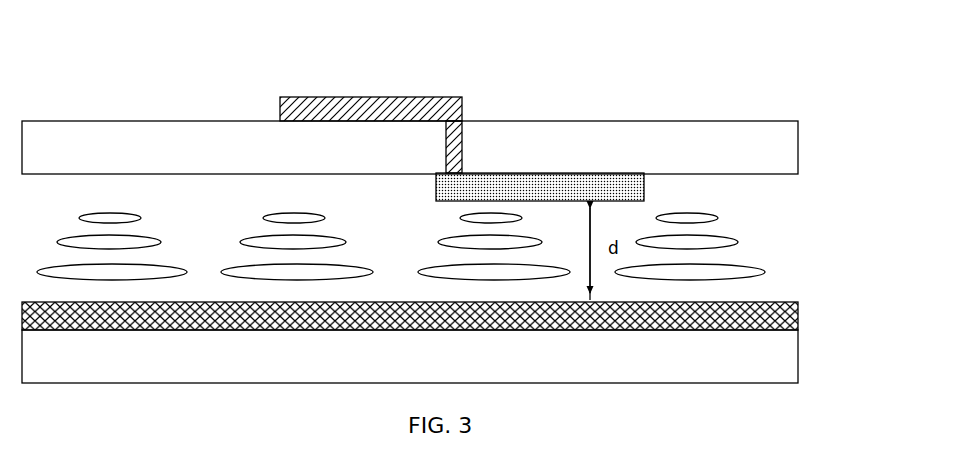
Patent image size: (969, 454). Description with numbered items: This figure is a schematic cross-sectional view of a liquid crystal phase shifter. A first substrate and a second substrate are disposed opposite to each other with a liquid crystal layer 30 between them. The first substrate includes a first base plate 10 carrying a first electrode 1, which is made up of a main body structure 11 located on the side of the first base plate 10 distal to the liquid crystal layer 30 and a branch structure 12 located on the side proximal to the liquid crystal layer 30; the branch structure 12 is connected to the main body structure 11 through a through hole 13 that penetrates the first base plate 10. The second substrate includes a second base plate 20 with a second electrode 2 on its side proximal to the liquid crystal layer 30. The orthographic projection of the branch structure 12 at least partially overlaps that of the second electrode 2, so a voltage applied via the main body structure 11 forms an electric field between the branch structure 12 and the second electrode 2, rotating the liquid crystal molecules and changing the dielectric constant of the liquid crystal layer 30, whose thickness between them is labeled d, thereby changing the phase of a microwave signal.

The first electrode 1 is at (556, 66).
The first base plate 10 is at (772, 138).
The main body structure 11 is at (384, 108).
The branch structure 12 is at (515, 186).
The through hole 13 is at (448, 130).
The liquid crystal layer 30 is at (767, 227).
The second electrode 2 is at (772, 308).
The second base plate 20 is at (772, 355).